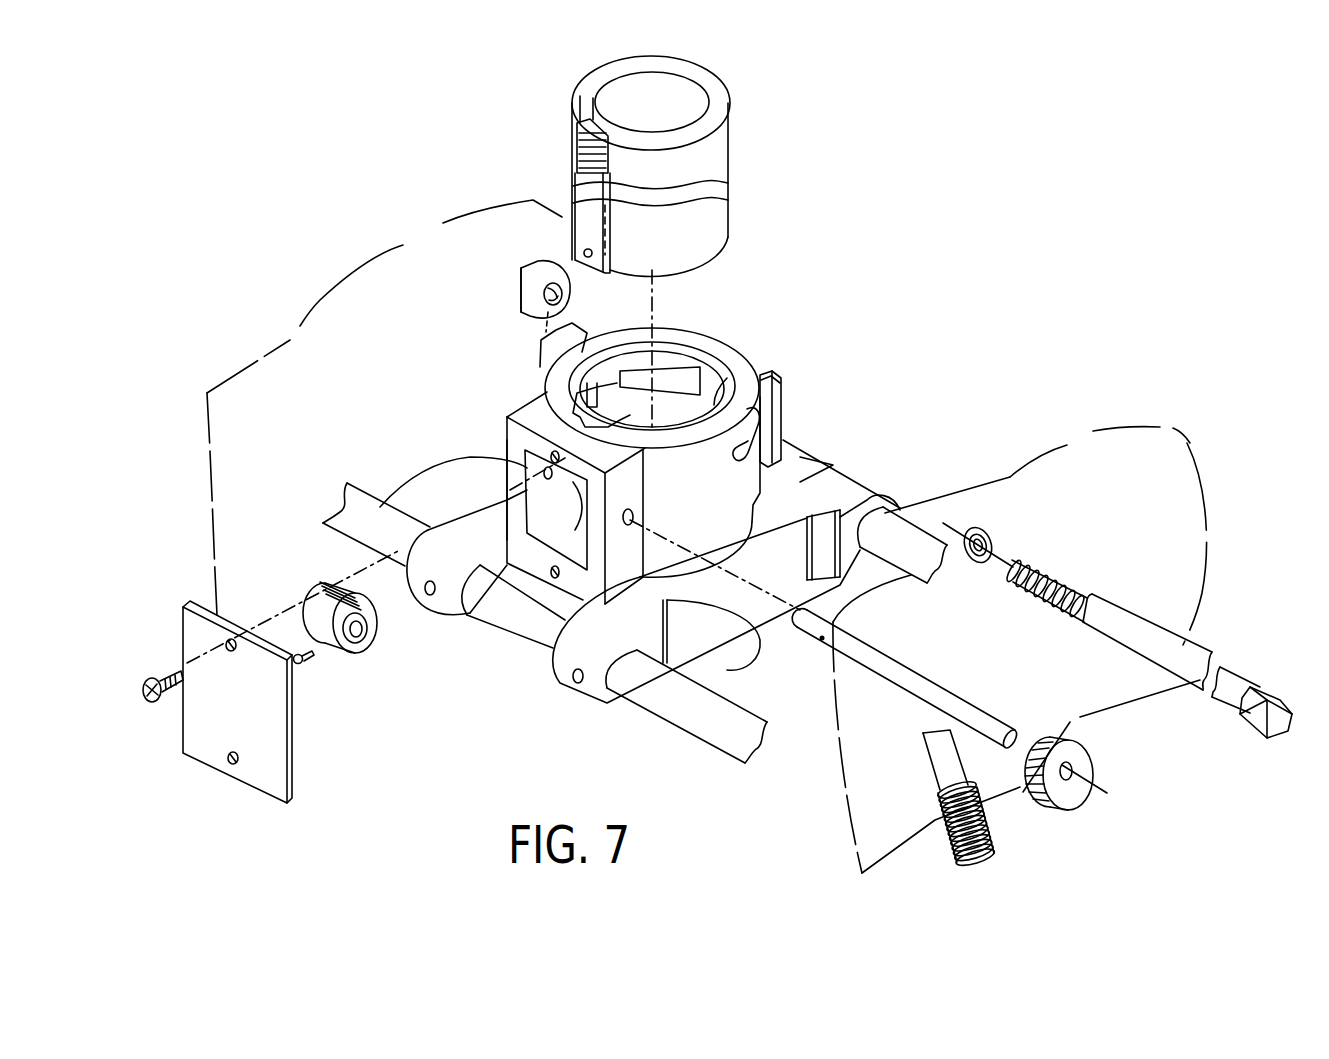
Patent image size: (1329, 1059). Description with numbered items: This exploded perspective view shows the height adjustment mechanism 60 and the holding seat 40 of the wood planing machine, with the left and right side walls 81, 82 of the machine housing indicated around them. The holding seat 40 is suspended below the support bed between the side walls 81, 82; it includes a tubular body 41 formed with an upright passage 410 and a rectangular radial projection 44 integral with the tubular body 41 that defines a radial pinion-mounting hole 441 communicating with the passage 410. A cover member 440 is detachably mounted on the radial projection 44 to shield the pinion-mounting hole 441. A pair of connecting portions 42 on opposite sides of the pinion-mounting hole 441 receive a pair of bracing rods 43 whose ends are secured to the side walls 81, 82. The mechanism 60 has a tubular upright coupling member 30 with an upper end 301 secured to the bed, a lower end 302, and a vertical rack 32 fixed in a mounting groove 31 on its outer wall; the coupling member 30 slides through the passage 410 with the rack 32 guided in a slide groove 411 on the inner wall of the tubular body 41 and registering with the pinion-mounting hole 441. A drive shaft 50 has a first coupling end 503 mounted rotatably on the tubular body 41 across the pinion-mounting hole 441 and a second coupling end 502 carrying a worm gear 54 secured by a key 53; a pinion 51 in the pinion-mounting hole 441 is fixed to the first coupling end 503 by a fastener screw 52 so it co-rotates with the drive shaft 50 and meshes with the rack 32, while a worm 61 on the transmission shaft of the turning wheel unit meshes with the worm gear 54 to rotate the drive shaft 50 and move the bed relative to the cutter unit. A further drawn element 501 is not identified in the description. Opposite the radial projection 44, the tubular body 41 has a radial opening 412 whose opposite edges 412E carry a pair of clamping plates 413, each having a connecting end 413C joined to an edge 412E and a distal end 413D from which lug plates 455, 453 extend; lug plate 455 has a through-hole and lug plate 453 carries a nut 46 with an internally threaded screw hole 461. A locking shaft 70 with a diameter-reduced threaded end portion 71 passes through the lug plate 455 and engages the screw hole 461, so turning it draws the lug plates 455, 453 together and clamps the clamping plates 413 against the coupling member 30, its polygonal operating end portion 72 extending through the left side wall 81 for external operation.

The coupling member 30 is at (744, 122).
The upper end 301 is at (706, 79).
The lower end 302 is at (728, 244).
The mounting groove 31 is at (585, 112).
The vertical rack 32 is at (585, 168).
The holding seat 40 is at (704, 314).
The tubular body 41 is at (713, 342).
The upright passage 410 is at (655, 427).
The slide groove 411 is at (560, 398).
The radial opening 412 is at (778, 395).
The opposite edges 412E is at (778, 457).
The clamping plates 413 is at (663, 400).
The connecting end 413C is at (597, 395).
The distal end 413D is at (712, 390).
The connecting portions 42 is at (455, 533).
The bracing rods 43 is at (357, 503).
The radial projection 44 is at (520, 408).
The cover member 440 is at (190, 642).
The pinion-mounting hole 441 is at (530, 487).
The lug plate 455 is at (885, 322).
The lug plate 453 is at (778, 383).
The nut 46 is at (530, 270).
The screw hole 461 is at (543, 324).
The drive shaft 50 is at (949, 684).
The pin 501 is at (713, 683).
The second coupling end 502 is at (982, 713).
The first coupling end 503 is at (822, 640).
The pinion 51 is at (313, 620).
The fastener screw 52 is at (300, 663).
The key 53 is at (1110, 785).
The worm gear 54 is at (1087, 757).
The height adjustment mechanism 60 is at (918, 759).
The worm 61 is at (978, 830).
The locking shaft 70 is at (1203, 645).
The threaded end portion 71 is at (1080, 598).
The operating end portion 72 is at (1277, 707).
The left side wall 81 is at (1187, 470).
The right side wall 82 is at (433, 250).